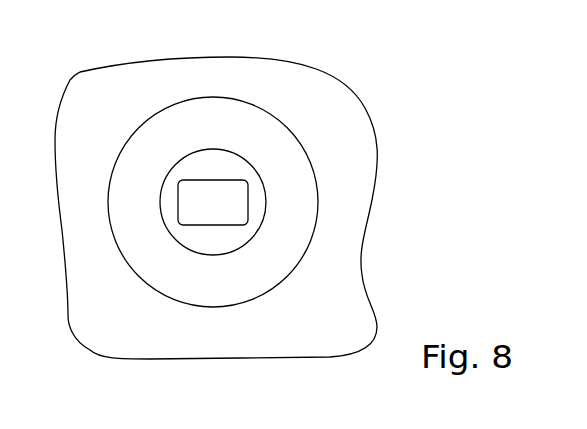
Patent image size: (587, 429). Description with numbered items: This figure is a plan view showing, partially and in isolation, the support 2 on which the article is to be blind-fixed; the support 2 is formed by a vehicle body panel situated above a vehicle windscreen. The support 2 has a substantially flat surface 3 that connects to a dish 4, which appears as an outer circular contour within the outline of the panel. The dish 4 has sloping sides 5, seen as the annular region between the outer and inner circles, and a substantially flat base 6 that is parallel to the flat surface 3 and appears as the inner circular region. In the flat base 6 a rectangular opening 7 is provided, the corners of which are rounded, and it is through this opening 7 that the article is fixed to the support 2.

The support 2 is at (364, 51).
The substantially flat surface 3 is at (293, 105).
The dish 4 is at (249, 125).
The sloping sides 5 is at (185, 140).
The substantially flat base 6 is at (258, 197).
The rectangular opening 7 is at (206, 213).